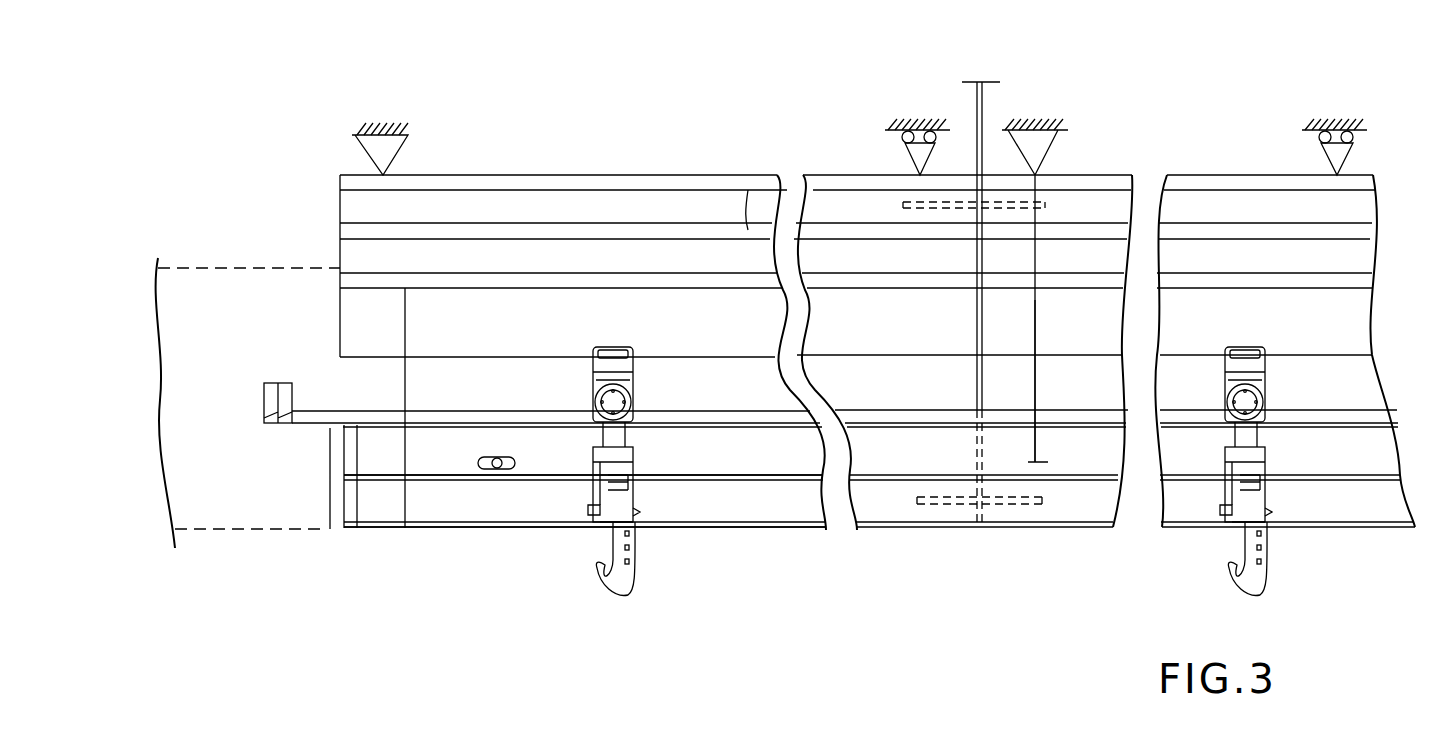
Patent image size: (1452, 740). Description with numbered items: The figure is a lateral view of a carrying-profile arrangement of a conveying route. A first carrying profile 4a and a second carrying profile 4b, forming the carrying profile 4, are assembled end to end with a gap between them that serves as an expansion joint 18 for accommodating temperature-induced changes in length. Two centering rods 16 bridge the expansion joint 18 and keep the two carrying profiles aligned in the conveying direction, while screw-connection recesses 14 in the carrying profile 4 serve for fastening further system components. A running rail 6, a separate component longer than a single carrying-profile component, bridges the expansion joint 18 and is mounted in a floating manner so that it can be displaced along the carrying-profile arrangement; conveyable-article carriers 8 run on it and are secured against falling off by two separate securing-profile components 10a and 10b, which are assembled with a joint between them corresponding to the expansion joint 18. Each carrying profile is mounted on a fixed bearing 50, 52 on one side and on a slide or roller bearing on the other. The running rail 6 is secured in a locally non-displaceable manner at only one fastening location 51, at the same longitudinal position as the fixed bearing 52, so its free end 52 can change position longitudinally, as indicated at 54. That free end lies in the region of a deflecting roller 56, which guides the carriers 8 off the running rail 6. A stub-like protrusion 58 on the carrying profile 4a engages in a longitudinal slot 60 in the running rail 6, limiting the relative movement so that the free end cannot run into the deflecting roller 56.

The carrying profile 4 is at (538, 212).
The first carrying profile 4a is at (675, 200).
The second carrying profile 4b is at (1223, 205).
The running rail 6 is at (700, 503).
The conveyable-article carriers 8 is at (637, 383).
The first securing-profile component 10a is at (724, 328).
The second securing-profile component 10b is at (1230, 328).
The screw-connection recesses 14 is at (748, 227).
The centering rods 16 is at (948, 203).
The expansion joint 18 is at (976, 305).
The fixed bearing 50 is at (385, 136).
The fastening location 51 is at (1040, 465).
The fixed bearing / free end of running rail 52 is at (298, 418).
The position-change indication 54 is at (270, 380).
The deflecting roller 56 is at (222, 288).
The stub-like protrusion 58 is at (493, 470).
The slot 60 is at (512, 458).